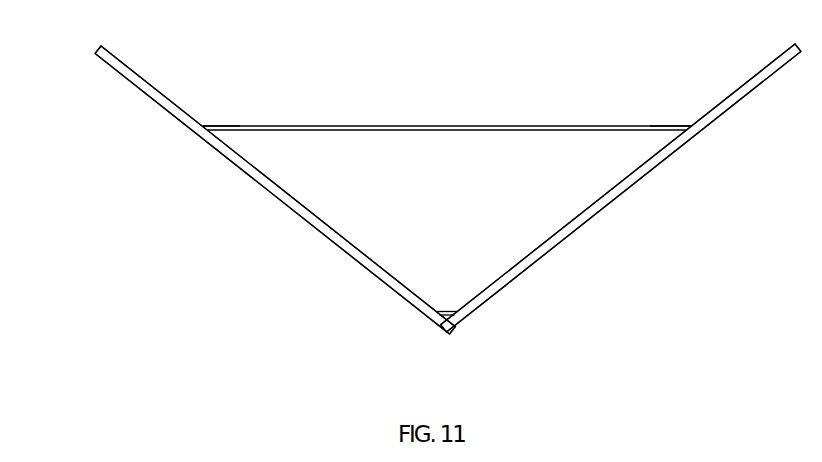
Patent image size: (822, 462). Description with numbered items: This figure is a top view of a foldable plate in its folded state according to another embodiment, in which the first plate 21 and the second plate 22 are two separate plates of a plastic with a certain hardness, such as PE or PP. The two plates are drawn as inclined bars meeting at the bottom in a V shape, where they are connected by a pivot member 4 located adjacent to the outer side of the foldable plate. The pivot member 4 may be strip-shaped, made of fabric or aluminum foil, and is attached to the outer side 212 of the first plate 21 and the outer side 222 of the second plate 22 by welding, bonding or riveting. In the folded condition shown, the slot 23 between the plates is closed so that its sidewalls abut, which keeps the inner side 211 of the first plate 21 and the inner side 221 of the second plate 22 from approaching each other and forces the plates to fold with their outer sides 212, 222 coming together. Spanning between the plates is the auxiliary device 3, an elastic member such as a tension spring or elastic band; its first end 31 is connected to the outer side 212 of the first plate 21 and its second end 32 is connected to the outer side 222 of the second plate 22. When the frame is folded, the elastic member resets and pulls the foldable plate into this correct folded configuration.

The first plate 21 is at (246, 187).
The inner side of the first plate 211 is at (145, 107).
The outer side of the first plate 212 is at (240, 46).
The second plate 22 is at (600, 228).
The inner side of the second plate 221 is at (689, 156).
The outer side of the second plate 222 is at (719, 85).
The auxiliary device 3 is at (404, 118).
The first end of the elastic member 31 is at (207, 115).
The second end of the elastic member 32 is at (680, 117).
The pivot member 4 is at (453, 303).
The slot 23 is at (434, 340).